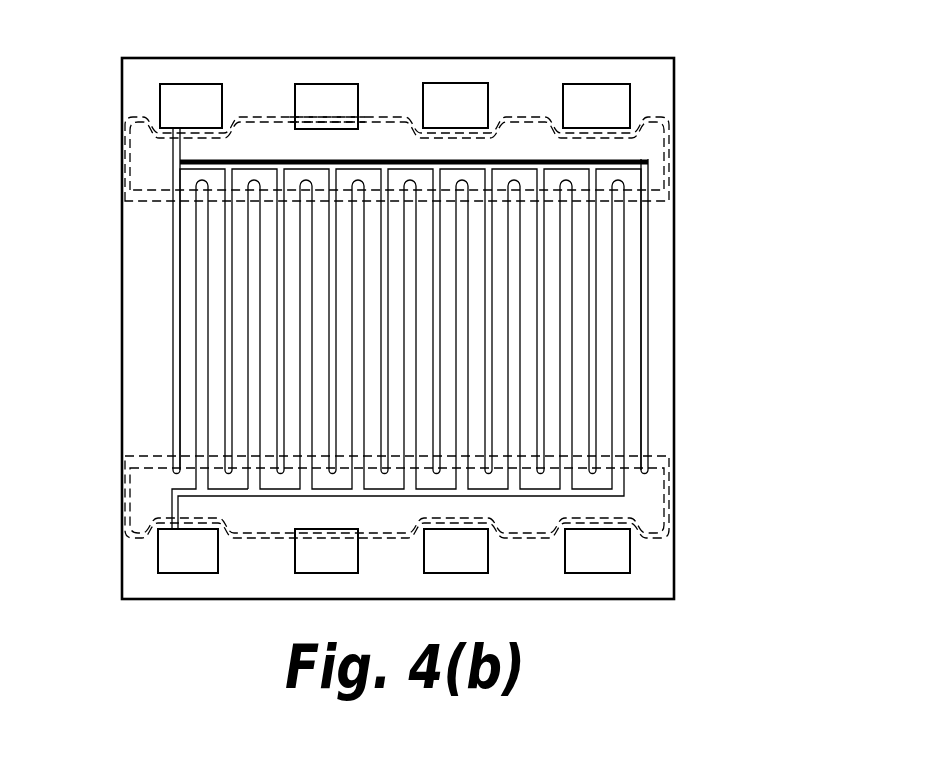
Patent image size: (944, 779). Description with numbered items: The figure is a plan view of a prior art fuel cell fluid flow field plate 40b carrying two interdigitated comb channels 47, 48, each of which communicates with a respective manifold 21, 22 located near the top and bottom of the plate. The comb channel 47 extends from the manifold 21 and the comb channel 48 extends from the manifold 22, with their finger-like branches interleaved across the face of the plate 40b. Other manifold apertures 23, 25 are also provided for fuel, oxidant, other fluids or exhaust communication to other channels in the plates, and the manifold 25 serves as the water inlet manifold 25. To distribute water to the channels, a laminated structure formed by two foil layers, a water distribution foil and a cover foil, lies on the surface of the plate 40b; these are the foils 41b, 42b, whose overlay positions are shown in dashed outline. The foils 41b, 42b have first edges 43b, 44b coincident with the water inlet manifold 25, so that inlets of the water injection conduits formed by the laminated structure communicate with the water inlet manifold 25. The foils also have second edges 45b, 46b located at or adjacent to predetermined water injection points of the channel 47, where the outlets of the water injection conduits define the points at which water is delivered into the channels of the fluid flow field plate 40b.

The manifold 21 is at (187, 96).
The manifold 22 is at (188, 550).
The manifold aperture 23 is at (605, 555).
The water inlet manifold 25 is at (328, 93).
The fluid flow field plate 40b is at (660, 430).
The foil 41b is at (668, 131).
The foil 42b is at (671, 185).
The first edge 43b is at (305, 125).
The first edge 44b is at (337, 123).
The second edge 45b is at (505, 185).
The second edge 46b is at (437, 203).
The interdigitated comb channel 47 is at (173, 395).
The interdigitated comb channel 48 is at (198, 421).